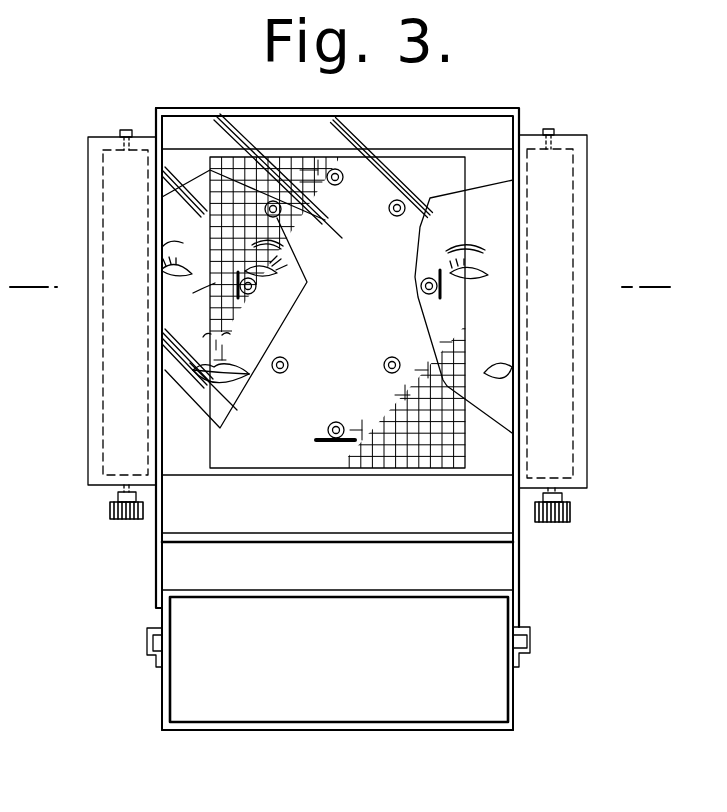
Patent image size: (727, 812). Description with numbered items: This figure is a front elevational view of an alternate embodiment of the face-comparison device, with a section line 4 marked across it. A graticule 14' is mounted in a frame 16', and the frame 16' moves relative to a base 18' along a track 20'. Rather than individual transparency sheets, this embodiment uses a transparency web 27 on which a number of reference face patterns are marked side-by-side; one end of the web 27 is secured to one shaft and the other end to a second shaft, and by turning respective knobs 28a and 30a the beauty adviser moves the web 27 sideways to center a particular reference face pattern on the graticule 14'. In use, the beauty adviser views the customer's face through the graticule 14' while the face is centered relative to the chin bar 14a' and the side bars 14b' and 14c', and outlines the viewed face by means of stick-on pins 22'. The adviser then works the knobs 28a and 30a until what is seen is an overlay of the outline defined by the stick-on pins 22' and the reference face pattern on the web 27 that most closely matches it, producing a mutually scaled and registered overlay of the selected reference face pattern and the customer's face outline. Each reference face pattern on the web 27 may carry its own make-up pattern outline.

The section line 4- 4 is at (23, 280).
The graticule 14' is at (337, 265).
The chin bar 14a' is at (361, 477).
The side bar 14b' is at (202, 302).
The side bar 14c' is at (477, 306).
The frame 16' is at (367, 399).
The base 18' is at (375, 661).
The track 20' is at (386, 650).
The stick-on pins 22' is at (357, 253).
The transparency web 27 is at (193, 477).
The knob 28a is at (116, 522).
The knob 30a is at (554, 524).